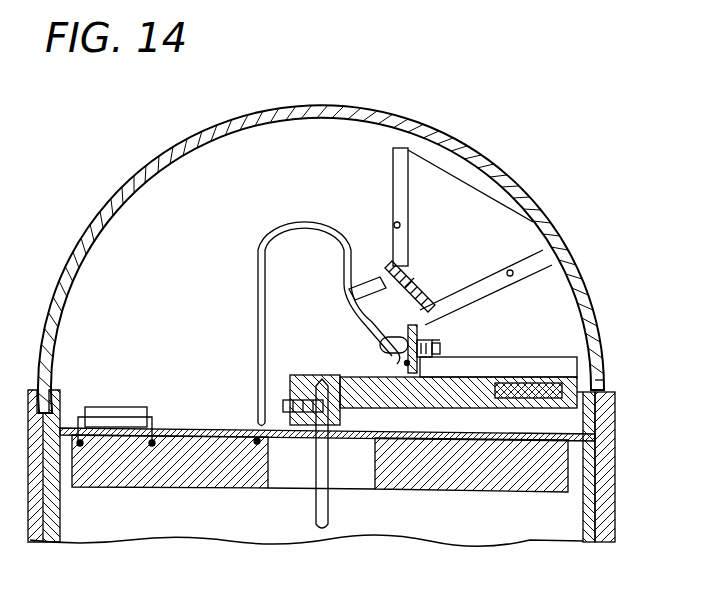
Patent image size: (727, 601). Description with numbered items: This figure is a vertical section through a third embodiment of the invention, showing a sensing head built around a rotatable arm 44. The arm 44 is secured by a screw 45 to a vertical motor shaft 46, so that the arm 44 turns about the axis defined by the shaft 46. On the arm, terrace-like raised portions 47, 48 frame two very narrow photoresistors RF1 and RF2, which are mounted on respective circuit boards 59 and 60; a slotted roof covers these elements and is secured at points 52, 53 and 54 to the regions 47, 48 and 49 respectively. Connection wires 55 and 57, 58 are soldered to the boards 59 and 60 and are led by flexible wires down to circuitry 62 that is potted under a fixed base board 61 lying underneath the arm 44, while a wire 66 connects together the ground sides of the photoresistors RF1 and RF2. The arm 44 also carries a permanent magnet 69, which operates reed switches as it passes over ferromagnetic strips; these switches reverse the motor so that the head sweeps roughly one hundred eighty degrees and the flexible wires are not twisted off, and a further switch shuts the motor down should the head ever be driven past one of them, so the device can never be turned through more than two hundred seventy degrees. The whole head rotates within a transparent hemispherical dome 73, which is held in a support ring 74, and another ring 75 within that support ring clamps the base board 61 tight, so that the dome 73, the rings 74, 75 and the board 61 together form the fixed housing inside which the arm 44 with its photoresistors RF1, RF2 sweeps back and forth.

The transparent hemispherical dome 73 is at (360, 106).
The terrace-like raised portion 47 is at (400, 166).
The securing point 52 is at (398, 222).
The securing point 53 is at (510, 270).
The photoresistor RF2 is at (410, 287).
The terrace-like raised portion 48 is at (472, 286).
The circuit board 60 is at (390, 270).
The connection wire 57 is at (350, 282).
The connection wire 58 is at (376, 310).
The wire 66 is at (408, 328).
The connection wire 55 is at (380, 345).
The photoresistor RF1 is at (437, 343).
The securing point 54 is at (480, 365).
The region 49 is at (543, 364).
The permanent magnet 69 is at (596, 381).
The rotatable arm 44 is at (577, 403).
The screw 45 is at (283, 403).
The fixed base board 61 is at (183, 428).
The circuit board 59 is at (413, 398).
The circuitry 62 is at (207, 483).
The vertical motor shaft 46 is at (328, 508).
The ring 75 is at (587, 541).
The support ring 74 is at (607, 542).